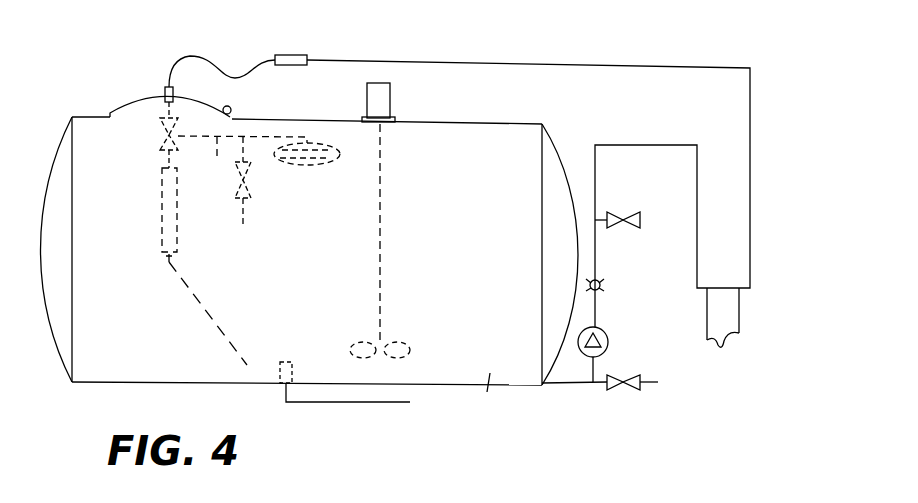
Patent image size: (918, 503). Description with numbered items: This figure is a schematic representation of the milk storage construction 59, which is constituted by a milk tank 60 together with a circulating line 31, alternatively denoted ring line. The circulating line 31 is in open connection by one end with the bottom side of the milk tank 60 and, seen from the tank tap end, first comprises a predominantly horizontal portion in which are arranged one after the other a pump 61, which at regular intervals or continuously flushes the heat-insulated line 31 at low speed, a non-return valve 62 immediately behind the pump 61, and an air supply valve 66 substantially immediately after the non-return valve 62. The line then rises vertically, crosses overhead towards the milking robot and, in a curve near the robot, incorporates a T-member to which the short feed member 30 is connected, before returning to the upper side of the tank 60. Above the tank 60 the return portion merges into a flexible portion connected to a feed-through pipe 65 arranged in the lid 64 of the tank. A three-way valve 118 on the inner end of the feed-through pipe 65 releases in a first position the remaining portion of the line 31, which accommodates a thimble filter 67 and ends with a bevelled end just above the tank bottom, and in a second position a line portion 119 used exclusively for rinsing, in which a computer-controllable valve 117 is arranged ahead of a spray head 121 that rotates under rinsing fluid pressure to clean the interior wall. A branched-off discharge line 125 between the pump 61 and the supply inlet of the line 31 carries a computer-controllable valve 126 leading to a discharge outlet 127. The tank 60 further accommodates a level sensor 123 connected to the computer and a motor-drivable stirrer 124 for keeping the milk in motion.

The feed member 30 is at (697, 375).
The circulating line 31 is at (596, 69).
The milk storage construction 59 is at (560, 144).
The milk tank 60 is at (475, 399).
The pump 61 is at (607, 336).
The non-return valve 62 is at (601, 281).
The manhole cover 64 is at (138, 101).
The feed-through pipe 65 is at (164, 87).
The air supply valve 66 is at (638, 212).
The thimble filter 67 is at (155, 232).
The valve 117 is at (260, 187).
The three-way valve 118 is at (150, 128).
The line portion 119 is at (242, 161).
The spray head 121 is at (354, 158).
The level sensor 123 is at (279, 358).
The stirrer 124 is at (390, 93).
The discharge line 125 is at (580, 388).
The valve 126 is at (628, 390).
The discharge outlet 127 is at (672, 360).